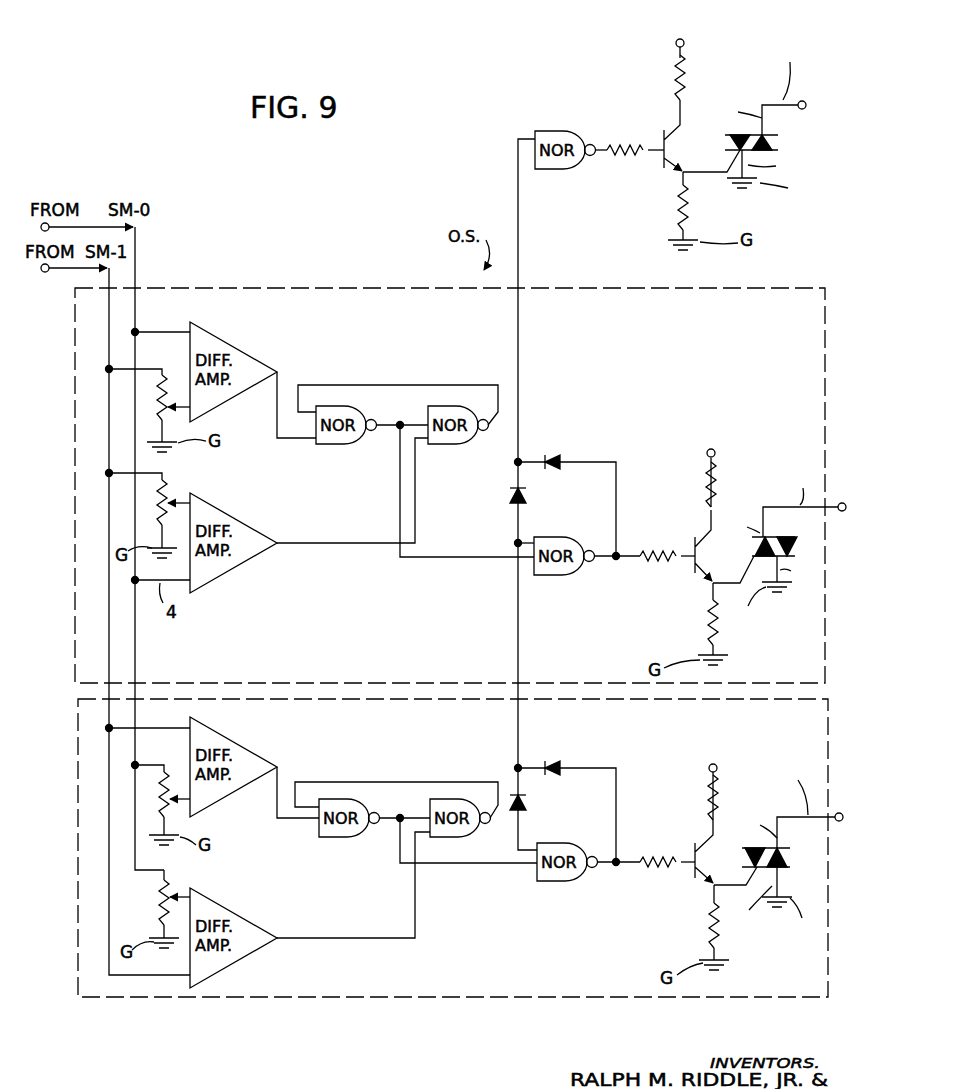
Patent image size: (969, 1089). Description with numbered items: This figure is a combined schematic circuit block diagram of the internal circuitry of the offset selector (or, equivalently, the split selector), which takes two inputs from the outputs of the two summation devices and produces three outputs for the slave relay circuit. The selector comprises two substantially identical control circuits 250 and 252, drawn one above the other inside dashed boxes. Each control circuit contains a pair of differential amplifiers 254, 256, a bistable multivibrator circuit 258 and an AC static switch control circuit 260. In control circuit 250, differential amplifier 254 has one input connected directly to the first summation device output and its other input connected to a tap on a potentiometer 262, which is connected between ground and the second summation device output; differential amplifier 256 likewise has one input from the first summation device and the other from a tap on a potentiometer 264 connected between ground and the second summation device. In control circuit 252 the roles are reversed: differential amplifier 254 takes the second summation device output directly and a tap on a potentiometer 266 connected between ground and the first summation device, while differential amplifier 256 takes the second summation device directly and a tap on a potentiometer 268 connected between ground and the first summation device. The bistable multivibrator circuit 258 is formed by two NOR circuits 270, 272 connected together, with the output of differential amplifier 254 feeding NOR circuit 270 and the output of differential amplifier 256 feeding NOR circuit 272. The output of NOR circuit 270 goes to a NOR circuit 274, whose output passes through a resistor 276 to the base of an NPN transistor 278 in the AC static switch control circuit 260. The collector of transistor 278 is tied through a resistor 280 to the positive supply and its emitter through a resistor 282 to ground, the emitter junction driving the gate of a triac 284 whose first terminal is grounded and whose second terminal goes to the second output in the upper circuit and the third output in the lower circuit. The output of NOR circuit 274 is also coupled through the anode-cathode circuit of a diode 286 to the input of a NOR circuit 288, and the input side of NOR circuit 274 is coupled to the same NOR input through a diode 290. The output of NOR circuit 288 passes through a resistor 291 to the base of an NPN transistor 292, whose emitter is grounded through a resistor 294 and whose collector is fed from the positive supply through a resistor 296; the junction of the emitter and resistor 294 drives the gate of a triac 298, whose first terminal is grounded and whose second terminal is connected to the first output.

The control circuit 250 is at (72, 630).
The control circuit 252 is at (76, 740).
The differential amplifier 254 is at (217, 331).
The differential amplifier 256 is at (228, 514).
The bistable multivibrator circuit 258 is at (407, 655).
The AC static switch control circuit 260 is at (686, 586).
The potentiometer 262 is at (168, 395).
The potentiometer 264 is at (170, 502).
The potentiometer 266 is at (170, 788).
The potentiometer 268 is at (172, 895).
The NOR circuit 270 is at (337, 447).
The NOR circuit 272 is at (462, 446).
The NOR circuit 274 is at (553, 576).
The resistor 276 is at (641, 566).
The NPN transistor 278 is at (692, 540).
The resistor 280 is at (716, 480).
The resistor 282 is at (722, 632).
The triac 284 is at (806, 536).
The diode 286 is at (558, 460).
The NOR circuit 288 is at (552, 128).
The diode 290 is at (528, 490).
The resistor 291 is at (612, 140).
The NPN transistor 292 is at (662, 136).
The resistor 294 is at (692, 205).
The resistor 296 is at (675, 80).
The triac 298 is at (778, 141).